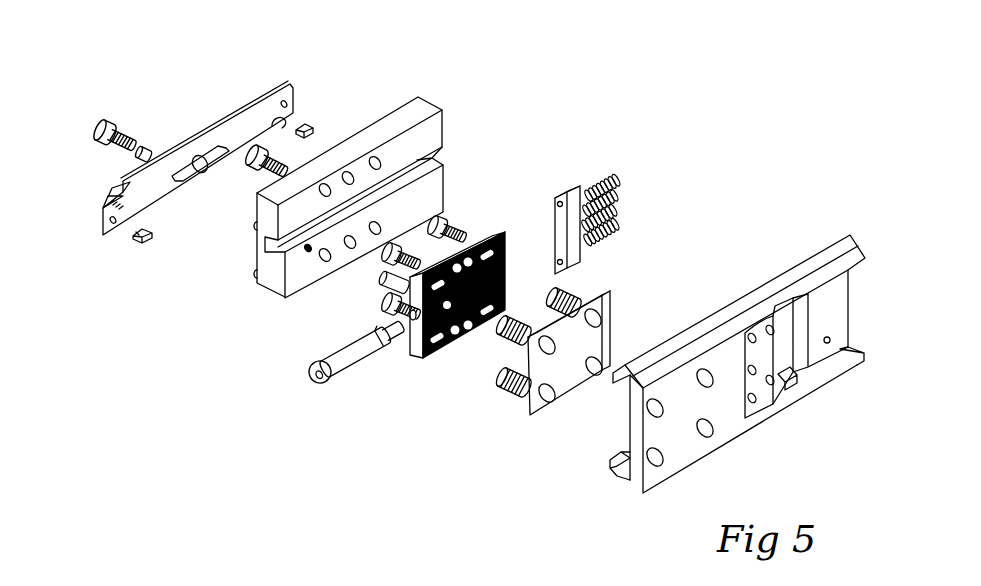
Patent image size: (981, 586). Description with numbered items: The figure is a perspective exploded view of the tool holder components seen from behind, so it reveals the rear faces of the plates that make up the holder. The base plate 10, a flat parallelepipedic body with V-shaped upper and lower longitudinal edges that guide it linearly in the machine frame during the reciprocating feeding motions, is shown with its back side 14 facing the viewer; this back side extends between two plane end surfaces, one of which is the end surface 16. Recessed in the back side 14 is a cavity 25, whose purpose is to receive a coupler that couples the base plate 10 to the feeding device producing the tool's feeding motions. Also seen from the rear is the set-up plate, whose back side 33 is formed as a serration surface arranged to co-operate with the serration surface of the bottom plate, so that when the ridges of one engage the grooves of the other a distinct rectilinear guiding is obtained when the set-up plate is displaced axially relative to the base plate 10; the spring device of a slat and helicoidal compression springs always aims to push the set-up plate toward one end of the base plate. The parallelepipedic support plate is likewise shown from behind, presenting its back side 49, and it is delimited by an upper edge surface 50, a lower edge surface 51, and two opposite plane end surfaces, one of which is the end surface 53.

The base plate 10 is at (742, 382).
The back side 14 is at (697, 419).
The end surface 16 is at (630, 480).
The cavity 25 is at (852, 352).
The back side 33 is at (497, 283).
The back side 49 is at (421, 158).
The upper edge surface 50 is at (349, 145).
The lower edge surface 51 is at (298, 287).
The end surface 53 is at (268, 273).